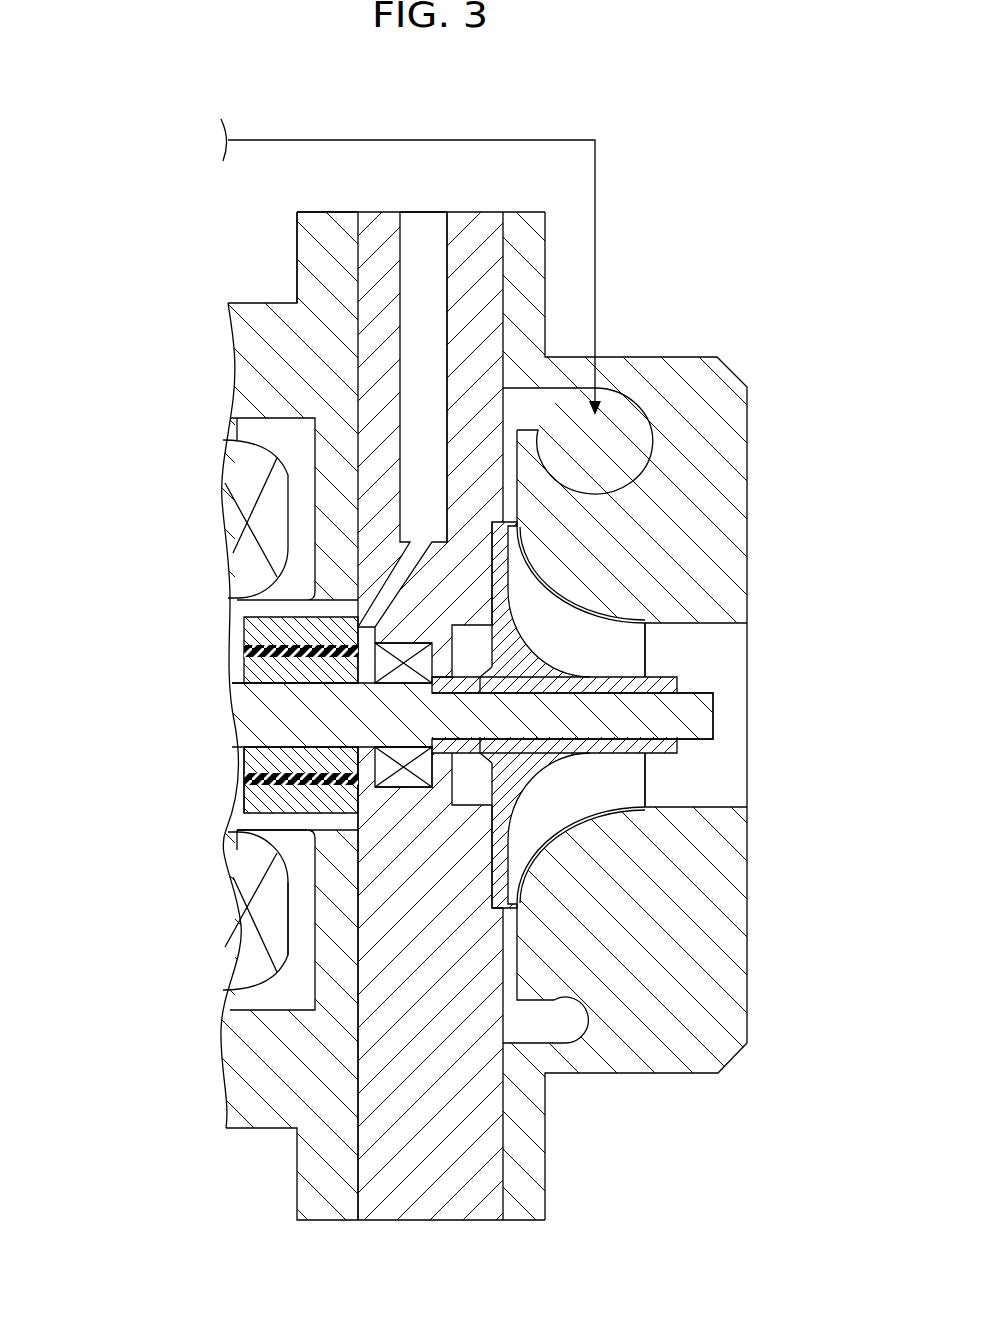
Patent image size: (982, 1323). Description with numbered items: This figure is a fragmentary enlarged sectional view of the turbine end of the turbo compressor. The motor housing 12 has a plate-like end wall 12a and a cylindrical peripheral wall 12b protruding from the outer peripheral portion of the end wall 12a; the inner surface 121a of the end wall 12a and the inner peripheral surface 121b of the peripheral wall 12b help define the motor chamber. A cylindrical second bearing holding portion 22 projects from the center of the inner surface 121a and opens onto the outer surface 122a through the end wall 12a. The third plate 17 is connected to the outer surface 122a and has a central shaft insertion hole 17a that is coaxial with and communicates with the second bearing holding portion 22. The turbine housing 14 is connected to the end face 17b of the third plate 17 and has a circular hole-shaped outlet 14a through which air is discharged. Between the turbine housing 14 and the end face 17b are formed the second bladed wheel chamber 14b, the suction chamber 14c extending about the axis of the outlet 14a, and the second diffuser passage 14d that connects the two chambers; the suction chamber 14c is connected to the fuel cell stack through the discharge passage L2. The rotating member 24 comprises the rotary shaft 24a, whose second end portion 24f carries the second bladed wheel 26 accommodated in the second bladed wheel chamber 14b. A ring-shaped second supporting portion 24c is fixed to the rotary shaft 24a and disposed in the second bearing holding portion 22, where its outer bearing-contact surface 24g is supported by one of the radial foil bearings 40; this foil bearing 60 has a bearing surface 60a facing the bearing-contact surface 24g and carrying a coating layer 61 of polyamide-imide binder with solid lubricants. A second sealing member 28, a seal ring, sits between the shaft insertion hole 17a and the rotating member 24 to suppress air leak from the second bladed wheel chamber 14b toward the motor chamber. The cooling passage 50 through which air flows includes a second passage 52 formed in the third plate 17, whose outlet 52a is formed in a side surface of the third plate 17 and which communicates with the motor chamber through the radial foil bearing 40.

The motor housing 12 is at (260, 303).
The end wall 12a is at (318, 223).
The peripheral wall 12b is at (230, 352).
The turbine housing 14 is at (682, 368).
The outlet 14a is at (722, 625).
The second bladed wheel chamber 14b is at (611, 652).
The suction chamber 14c is at (606, 458).
The second diffuser passage 14d is at (512, 468).
The third plate 17 is at (472, 223).
The shaft insertion hole 17a is at (415, 785).
The end face 17b is at (507, 1163).
The second bearing holding portion 22 is at (240, 820).
The rotating member 24 is at (232, 683).
The rotary shaft 24a is at (232, 724).
The second supporting portion 24c is at (240, 763).
The second end portion 24f is at (718, 716).
The bearing-contact surface 24g is at (255, 833).
The second bladed wheel 26 is at (543, 768).
The second sealing member 28 is at (405, 668).
The radial foil bearing 40 is at (242, 800).
The cooling passage 50 is at (413, 207).
The second passage 52 is at (423, 259).
The outlet 52a is at (447, 237).
The foil bearing 60 is at (251, 912).
The bearing surface 60a is at (277, 640).
The coating layer 61 is at (246, 632).
The inner surface 121a is at (257, 1017).
The inner peripheral surface 121b is at (222, 997).
The outer surface 122a is at (360, 1172).
The discharge passage L2 is at (268, 140).